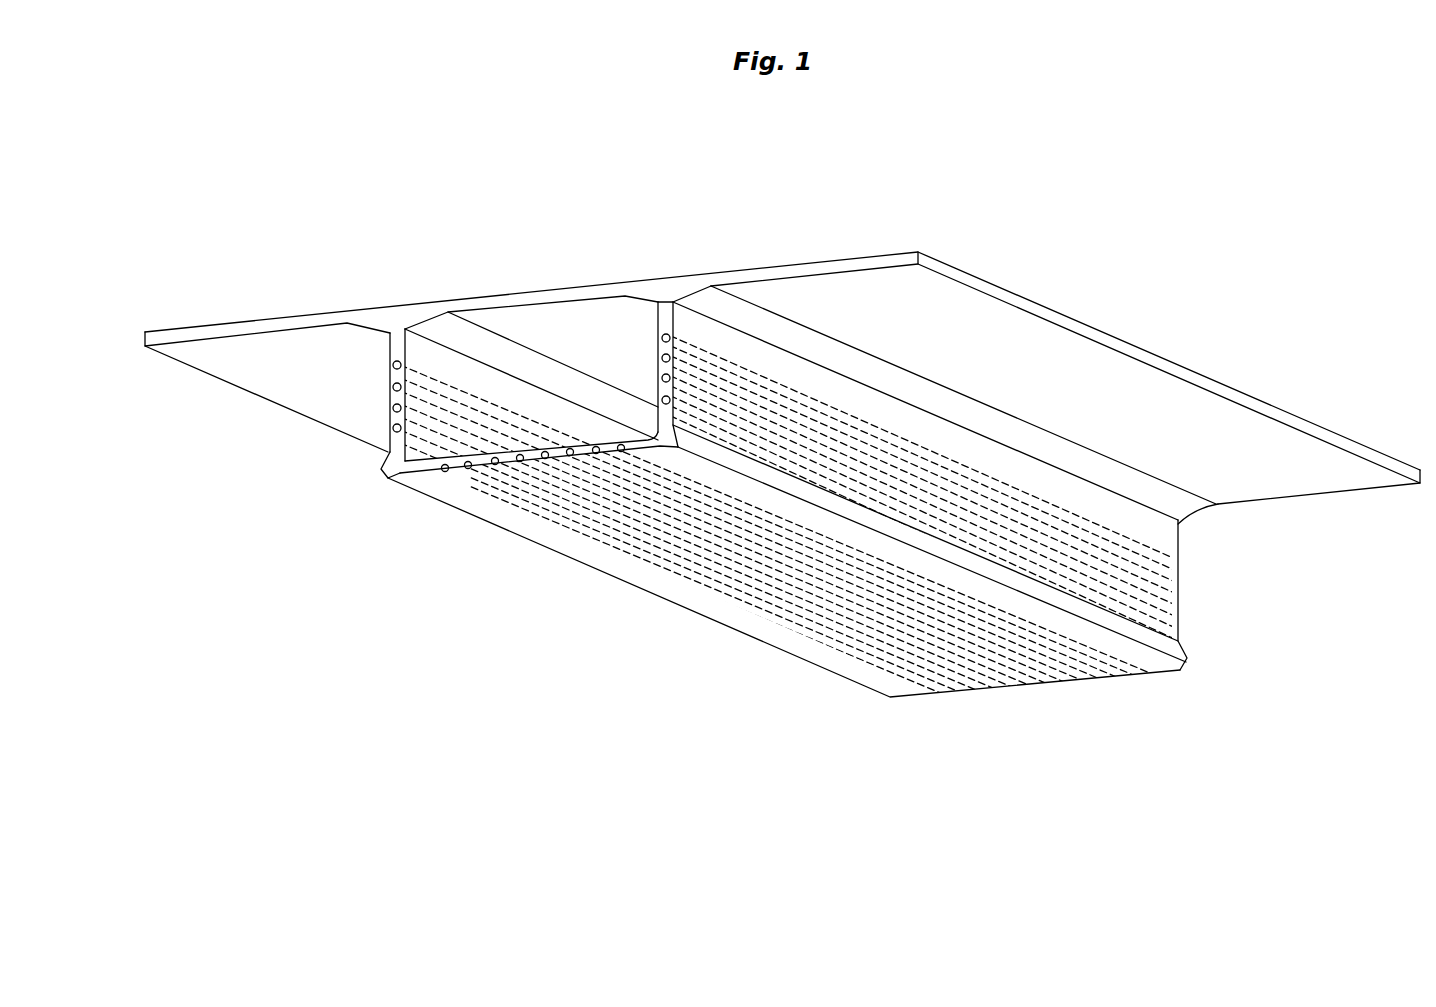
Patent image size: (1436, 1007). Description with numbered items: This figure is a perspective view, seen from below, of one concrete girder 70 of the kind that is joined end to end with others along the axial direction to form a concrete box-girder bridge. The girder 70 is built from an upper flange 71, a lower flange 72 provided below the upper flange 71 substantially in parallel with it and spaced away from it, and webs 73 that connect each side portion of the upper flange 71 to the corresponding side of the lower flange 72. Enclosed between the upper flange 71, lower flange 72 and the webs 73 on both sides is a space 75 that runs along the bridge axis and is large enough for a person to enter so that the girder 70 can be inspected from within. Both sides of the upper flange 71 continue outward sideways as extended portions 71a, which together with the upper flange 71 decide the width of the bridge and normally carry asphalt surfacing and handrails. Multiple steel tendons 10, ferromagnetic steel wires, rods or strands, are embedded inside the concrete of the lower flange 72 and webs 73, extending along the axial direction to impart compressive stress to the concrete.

The steel tendons 10 is at (537, 458).
The concrete girder 70 is at (1045, 262).
The upper flange 71 is at (523, 302).
The extended portions 71a is at (237, 329).
The lower flange 72 is at (455, 473).
The webs 73 is at (393, 416).
The space 75 is at (572, 332).